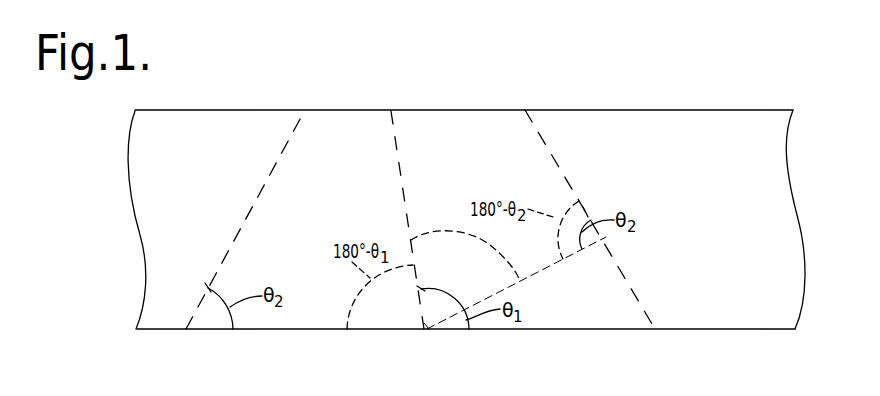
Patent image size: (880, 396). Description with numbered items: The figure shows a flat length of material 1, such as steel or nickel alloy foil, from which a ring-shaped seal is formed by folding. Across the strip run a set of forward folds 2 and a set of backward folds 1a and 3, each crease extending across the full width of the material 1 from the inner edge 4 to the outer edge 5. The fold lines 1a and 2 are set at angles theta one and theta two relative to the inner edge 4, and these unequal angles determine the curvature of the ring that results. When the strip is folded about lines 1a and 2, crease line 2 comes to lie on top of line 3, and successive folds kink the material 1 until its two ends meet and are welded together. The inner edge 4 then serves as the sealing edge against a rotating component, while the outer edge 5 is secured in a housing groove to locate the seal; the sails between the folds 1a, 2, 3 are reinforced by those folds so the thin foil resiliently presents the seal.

The material 1 is at (744, 40).
The backward fold 1a is at (394, 118).
The forward fold 2 is at (259, 193).
The backward fold 3 is at (542, 138).
The inner edge 4 is at (718, 322).
The outer edge 5 is at (237, 118).